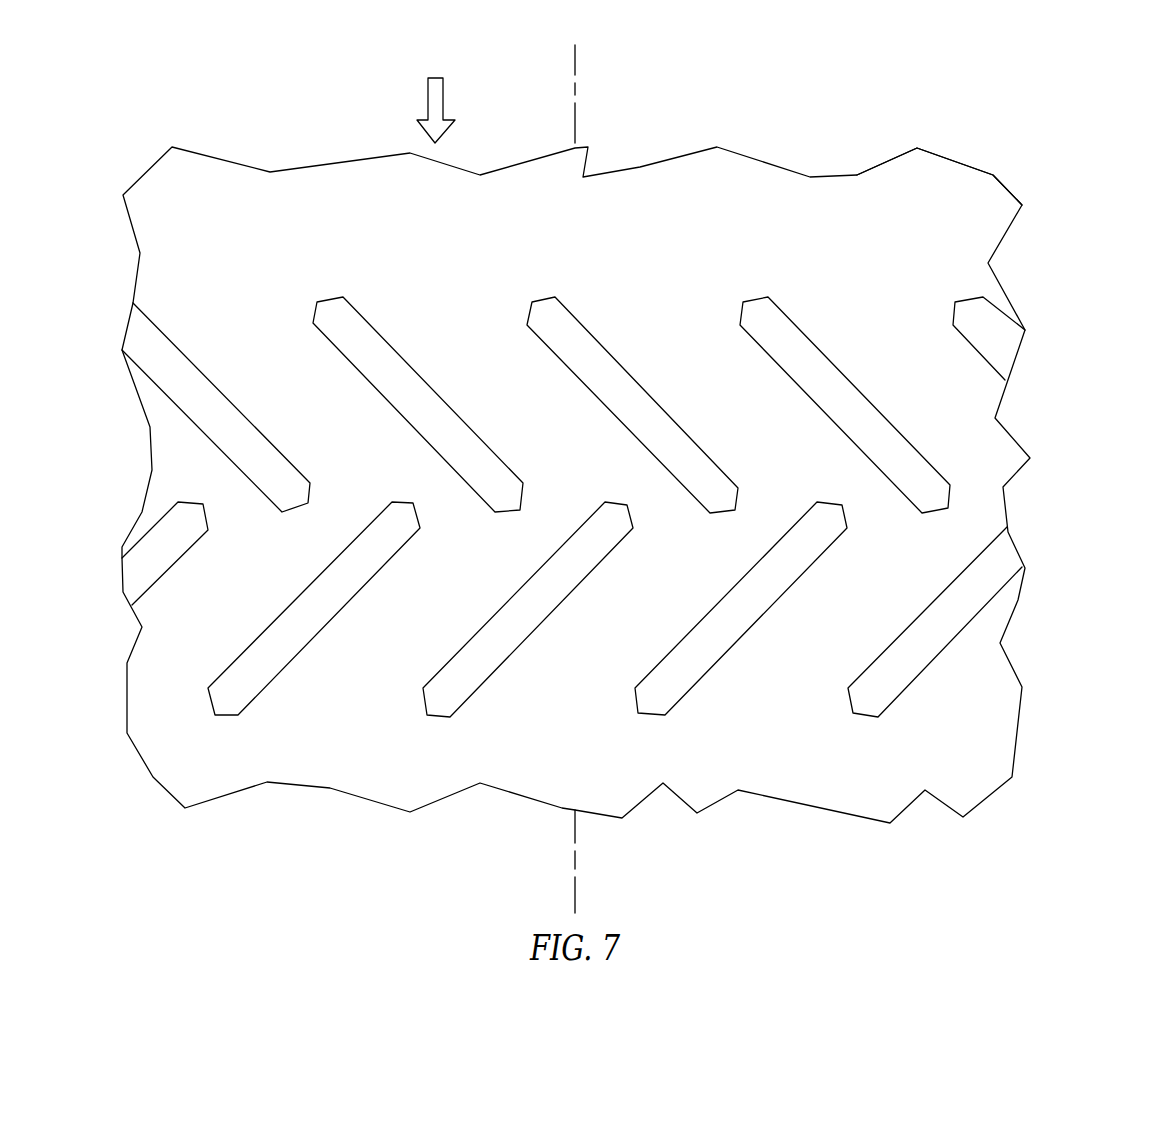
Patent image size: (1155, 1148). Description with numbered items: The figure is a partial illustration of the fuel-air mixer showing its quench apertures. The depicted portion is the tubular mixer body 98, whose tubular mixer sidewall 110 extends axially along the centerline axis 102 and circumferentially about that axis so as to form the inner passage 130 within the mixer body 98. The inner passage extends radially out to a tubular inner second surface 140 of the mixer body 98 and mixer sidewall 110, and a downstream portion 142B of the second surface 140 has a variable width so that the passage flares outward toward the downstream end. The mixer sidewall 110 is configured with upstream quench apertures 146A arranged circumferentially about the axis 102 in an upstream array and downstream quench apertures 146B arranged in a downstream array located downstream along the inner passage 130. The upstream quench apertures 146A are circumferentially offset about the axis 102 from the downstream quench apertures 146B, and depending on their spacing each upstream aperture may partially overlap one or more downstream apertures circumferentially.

The mixer body 98 is at (620, 476).
The mixer sidewall 110 is at (620, 476).
The centerline axis 102 is at (575, 53).
The inner passage 130 is at (371, 200).
The second surface 140 is at (939, 149).
The downstream portion of the second surface 142B is at (921, 175).
The upstream quench apertures 146A is at (313, 310).
The downstream quench apertures 146B is at (420, 702).